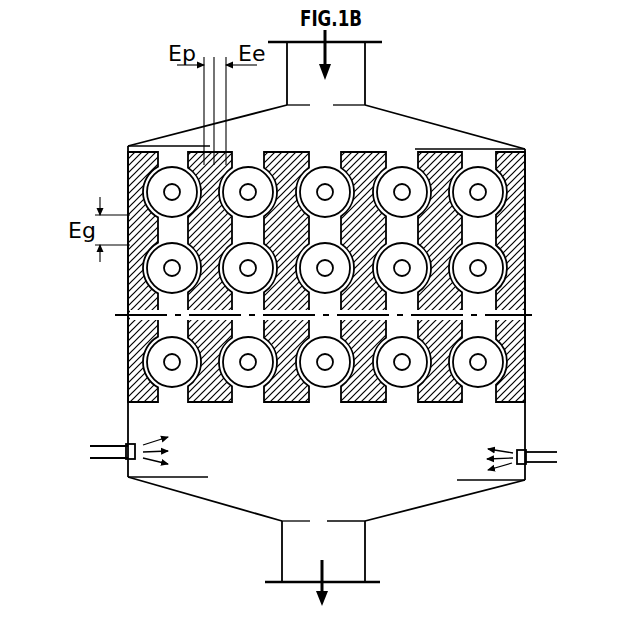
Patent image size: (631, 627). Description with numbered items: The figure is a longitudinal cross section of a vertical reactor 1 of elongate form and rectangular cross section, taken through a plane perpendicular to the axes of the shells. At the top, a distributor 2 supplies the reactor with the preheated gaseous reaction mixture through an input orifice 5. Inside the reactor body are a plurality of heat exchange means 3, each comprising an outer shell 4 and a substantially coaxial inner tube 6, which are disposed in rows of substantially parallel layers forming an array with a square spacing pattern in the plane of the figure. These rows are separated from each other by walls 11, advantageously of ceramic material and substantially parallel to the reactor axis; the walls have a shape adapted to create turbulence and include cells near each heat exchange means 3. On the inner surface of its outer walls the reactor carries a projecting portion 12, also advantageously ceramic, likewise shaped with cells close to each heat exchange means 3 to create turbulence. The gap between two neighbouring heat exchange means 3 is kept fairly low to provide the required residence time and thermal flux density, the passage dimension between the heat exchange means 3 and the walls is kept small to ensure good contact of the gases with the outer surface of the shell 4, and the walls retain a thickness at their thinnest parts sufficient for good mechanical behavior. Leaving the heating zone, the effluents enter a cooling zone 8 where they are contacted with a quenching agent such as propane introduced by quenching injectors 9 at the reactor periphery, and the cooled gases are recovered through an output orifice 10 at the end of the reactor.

The vertical reactor 1 is at (89, 97).
The distributor 2 is at (410, 116).
The heat exchange means 3 is at (478, 404).
The outer shell 4 is at (497, 355).
The input orifice 5 is at (348, 59).
The inner tube 6 is at (483, 368).
The cooling zone 8 is at (448, 488).
The quenching injectors 9 is at (540, 465).
The output orifice 10 is at (355, 547).
The walls 11 is at (450, 163).
The projecting portion 12 is at (510, 227).